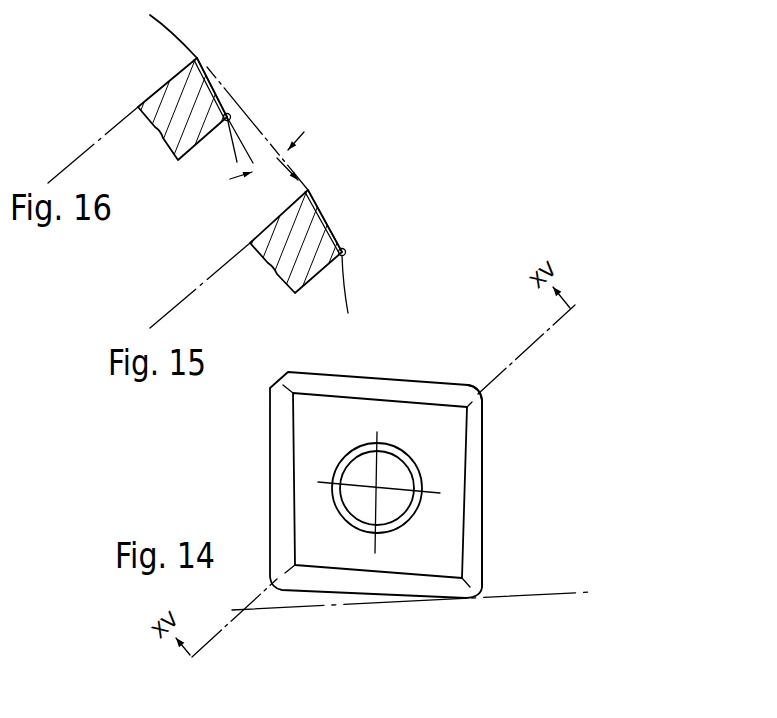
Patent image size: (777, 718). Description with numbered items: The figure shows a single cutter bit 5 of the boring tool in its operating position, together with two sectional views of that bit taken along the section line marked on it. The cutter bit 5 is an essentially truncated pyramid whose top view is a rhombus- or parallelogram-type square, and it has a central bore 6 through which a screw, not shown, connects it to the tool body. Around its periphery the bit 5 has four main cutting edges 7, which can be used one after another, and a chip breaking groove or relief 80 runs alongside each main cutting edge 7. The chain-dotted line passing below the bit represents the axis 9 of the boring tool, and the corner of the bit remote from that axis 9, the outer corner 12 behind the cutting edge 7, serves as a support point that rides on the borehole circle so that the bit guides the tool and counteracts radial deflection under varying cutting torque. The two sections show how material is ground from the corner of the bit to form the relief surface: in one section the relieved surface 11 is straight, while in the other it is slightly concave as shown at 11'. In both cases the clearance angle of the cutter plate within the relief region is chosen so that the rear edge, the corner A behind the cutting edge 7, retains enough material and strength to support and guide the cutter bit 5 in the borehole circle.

In FIG. 16, the relief surface 11 is at (199, 92).
In FIG. 15, the concave relief surface 11' is at (301, 237).
In FIG. 16, the corner behind the cutting edge A is at (229, 115).
In FIG. 15, the corner behind the cutting edge A is at (344, 250).
In FIG. 16, the clearance face k is at (233, 133).
In FIG. 15, the clearance face k is at (348, 292).
In FIG. 14, the cutter bit 5 is at (440, 478).
In FIG. 14, the central bore 6 is at (390, 475).
In FIG. 14, the chip breaking groove 80 is at (473, 528).
In FIG. 14, the main cutting edge 7 is at (483, 565).
In FIG. 14, the outer corner 12 is at (490, 392).
In FIG. 14, the axis 9 is at (577, 593).